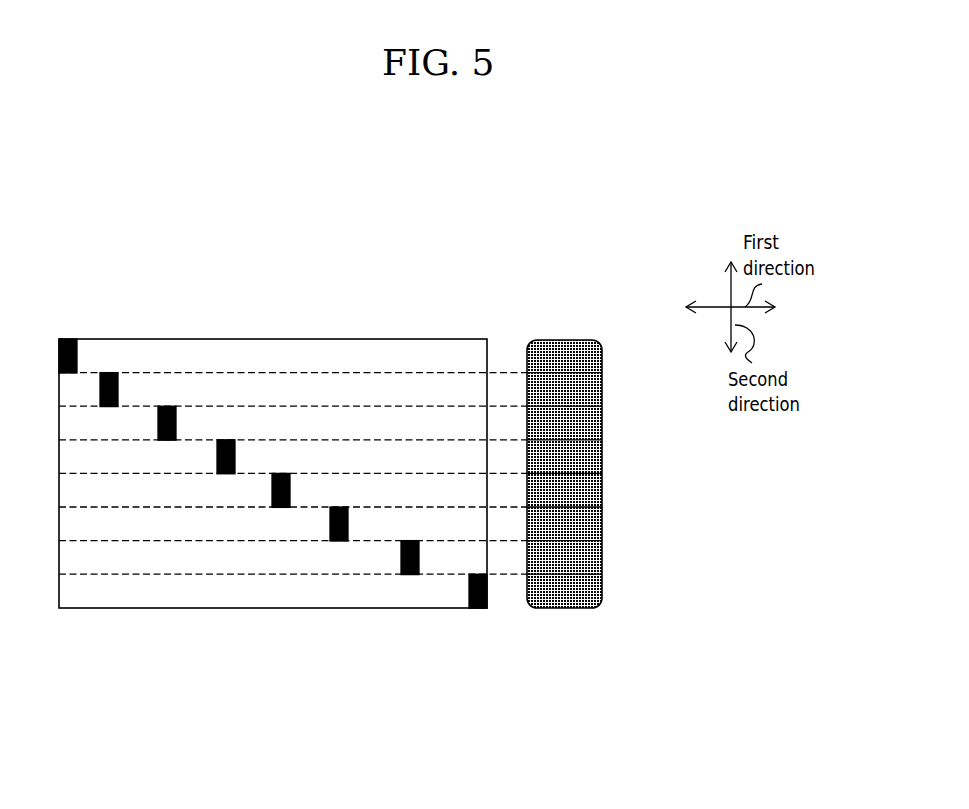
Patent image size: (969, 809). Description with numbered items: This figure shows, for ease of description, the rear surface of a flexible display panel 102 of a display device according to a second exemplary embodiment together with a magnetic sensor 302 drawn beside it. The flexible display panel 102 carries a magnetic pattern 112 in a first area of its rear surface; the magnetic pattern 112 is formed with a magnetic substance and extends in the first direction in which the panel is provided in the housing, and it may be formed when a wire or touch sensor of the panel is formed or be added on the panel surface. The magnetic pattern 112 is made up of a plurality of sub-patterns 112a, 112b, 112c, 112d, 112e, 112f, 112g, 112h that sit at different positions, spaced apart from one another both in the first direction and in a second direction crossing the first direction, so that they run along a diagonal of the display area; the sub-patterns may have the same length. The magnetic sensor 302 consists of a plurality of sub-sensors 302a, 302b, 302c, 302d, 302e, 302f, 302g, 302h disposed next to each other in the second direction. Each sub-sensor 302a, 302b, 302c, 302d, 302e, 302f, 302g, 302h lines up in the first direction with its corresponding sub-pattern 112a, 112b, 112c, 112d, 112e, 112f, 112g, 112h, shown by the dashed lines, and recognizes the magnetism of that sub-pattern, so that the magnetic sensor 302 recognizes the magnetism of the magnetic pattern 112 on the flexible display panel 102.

The flexible display panel 102 is at (373, 262).
The magnetic pattern 112 is at (273, 525).
The sub-pattern 112a is at (470, 618).
The sub-pattern 112b is at (410, 575).
The sub-pattern 112c is at (338, 541).
The sub-pattern 112d is at (283, 508).
The sub-pattern 112e is at (226, 474).
The sub-pattern 112f is at (166, 440).
The sub-pattern 112g is at (107, 407).
The sub-pattern 112h is at (63, 374).
The magnetic sensor 302 is at (631, 474).
The sub-sensor 302a is at (599, 591).
The sub-sensor 302b is at (593, 556).
The sub-sensor 302c is at (593, 523).
The sub-sensor 302d is at (593, 489).
The sub-sensor 302e is at (593, 456).
The sub-sensor 302f is at (593, 422).
The sub-sensor 302g is at (593, 389).
The sub-sensor 302h is at (593, 355).